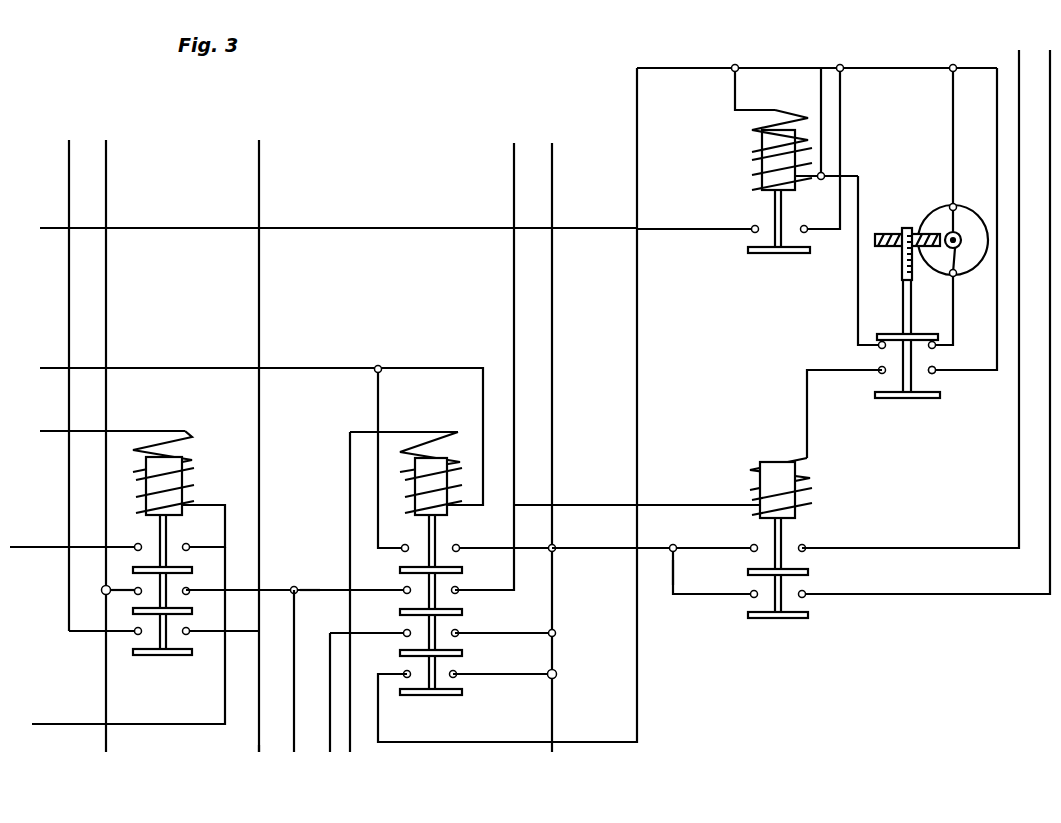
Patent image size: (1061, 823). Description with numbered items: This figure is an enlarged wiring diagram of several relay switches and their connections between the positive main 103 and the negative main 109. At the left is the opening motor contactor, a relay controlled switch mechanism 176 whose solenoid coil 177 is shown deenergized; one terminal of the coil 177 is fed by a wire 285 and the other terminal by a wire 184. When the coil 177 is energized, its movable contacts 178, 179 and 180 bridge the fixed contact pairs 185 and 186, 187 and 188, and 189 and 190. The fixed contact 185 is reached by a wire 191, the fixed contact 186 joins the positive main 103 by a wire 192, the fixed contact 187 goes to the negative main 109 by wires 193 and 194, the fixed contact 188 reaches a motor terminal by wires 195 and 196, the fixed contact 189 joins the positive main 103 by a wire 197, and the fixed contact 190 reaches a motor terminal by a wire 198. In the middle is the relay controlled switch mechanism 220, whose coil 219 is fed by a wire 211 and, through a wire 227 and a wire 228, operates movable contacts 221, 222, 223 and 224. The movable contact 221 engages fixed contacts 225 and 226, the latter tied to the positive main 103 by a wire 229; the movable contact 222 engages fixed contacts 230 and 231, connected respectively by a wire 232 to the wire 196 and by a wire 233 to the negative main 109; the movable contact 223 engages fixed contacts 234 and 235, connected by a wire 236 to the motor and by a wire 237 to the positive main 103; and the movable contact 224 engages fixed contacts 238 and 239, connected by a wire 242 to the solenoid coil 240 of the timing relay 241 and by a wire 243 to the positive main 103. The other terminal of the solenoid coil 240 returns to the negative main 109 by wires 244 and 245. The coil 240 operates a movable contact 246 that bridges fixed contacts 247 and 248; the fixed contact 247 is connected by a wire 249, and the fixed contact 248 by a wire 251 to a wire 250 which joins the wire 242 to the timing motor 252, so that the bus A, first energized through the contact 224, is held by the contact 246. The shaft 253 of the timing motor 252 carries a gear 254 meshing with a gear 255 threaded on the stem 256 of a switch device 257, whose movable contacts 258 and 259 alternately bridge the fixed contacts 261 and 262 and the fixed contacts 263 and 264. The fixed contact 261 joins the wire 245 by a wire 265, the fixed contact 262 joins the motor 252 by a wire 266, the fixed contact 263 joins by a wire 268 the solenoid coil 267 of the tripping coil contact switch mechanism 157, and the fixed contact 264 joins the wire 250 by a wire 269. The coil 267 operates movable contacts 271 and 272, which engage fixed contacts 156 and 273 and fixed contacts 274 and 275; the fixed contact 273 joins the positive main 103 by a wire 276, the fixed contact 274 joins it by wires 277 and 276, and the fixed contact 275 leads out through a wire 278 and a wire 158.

The positive main 103 is at (552, 305).
The negative main 109 is at (588, 505).
The fixed contact 156 is at (802, 547).
The tripping coil contact switch mechanism 157 is at (801, 538).
The conductor 158 is at (1019, 52).
The relay controlled switch mechanism 176 is at (185, 486).
The solenoid coil 177 is at (186, 431).
The movable contact 178 is at (192, 571).
The movable contact 179 is at (192, 611).
The movable contact 180 is at (143, 656).
The wire 184 is at (60, 724).
The fixed contact 185 is at (135, 546).
The fixed contact 186 is at (192, 540).
The fixed contact 187 is at (135, 593).
The fixed contact 188 is at (183, 593).
The fixed contact 189 is at (135, 633).
The fixed contact 190 is at (188, 634).
The wire 191 is at (33, 547).
The wire 192 is at (259, 198).
The wire 193 is at (106, 586).
The wire 194 is at (106, 745).
The wire 195 is at (293, 587).
The wire 196 is at (293, 752).
The wire 197 is at (69, 198).
The wire 198 is at (257, 752).
The wire 211 is at (350, 752).
The coil 219 is at (440, 436).
The relay controlled switch mechanism 220 is at (400, 492).
The movable contact 221 is at (462, 571).
The movable contact 222 is at (462, 612).
The movable contact 223 is at (462, 653).
The movable contact 224 is at (420, 696).
The fixed contact 225 is at (404, 547).
The fixed contact 226 is at (463, 540).
The wire 227 is at (400, 369).
The wire 228 is at (378, 431).
The wire 229 is at (554, 552).
The fixed contact 230 is at (404, 589).
The fixed contact 231 is at (464, 584).
The wire 232 is at (316, 590).
The wire 233 is at (514, 580).
The fixed contact 234 is at (404, 632).
The fixed contact 235 is at (457, 632).
The wire 236 is at (330, 752).
The wire 237 is at (554, 636).
The fixed contact 238 is at (405, 672).
The fixed contact 239 is at (455, 677).
The solenoid coil 240 is at (760, 152).
The timing relay 241 is at (749, 220).
The wire 242 is at (474, 742).
The wire 243 is at (540, 682).
The wire 244 is at (821, 181).
The wire 245 is at (841, 62).
The movable contact 246 is at (768, 254).
The fixed contact 247 is at (753, 232).
The fixed contact 248 is at (806, 233).
The wire 249 is at (338, 250).
The wire 250 is at (948, 100).
The wire 251 is at (835, 128).
The timing motor 252 is at (908, 222).
The shaft 253 is at (968, 214).
The gear 254 is at (956, 276).
The gear 255 is at (880, 248).
The stem 256 is at (905, 322).
The switch device 257 is at (926, 337).
The movable contact 258 is at (876, 336).
The movable contact 259 is at (896, 399).
The fixed contact 261 is at (878, 351).
The fixed contact 262 is at (935, 373).
The fixed contact 263 is at (879, 374).
The fixed contact 264 is at (934, 376).
The wire 265 is at (858, 190).
The wire 266 is at (961, 348).
The solenoid coil 267 is at (760, 476).
The wire 268 is at (807, 390).
The wire 269 is at (997, 96).
The movable contact 271 is at (808, 572).
The movable contact 272 is at (783, 619).
The fixed contact 273 is at (752, 547).
The fixed contact 274 is at (752, 597).
The fixed contact 275 is at (805, 597).
The wire 276 is at (700, 549).
The wire 277 is at (673, 598).
The wire 278 is at (1050, 52).
The wire 285 is at (50, 431).
The bus A is at (733, 66).